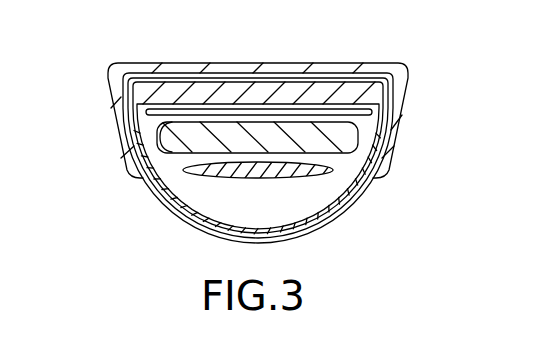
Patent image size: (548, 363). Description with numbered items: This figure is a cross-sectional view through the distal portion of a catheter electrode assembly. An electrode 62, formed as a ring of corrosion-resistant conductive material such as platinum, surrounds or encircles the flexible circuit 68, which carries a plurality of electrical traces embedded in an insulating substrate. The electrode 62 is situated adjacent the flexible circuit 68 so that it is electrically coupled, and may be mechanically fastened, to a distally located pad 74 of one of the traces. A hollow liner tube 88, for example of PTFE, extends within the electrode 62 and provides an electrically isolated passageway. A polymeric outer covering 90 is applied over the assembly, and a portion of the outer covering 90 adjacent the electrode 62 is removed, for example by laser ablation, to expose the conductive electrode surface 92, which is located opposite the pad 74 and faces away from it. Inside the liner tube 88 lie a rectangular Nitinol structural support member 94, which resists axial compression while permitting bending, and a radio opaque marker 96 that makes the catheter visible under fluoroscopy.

The electrode 62 is at (158, 77).
The flexible circuit 68 is at (133, 90).
The distally located pad 74 is at (273, 69).
The liner tube 88 is at (360, 145).
The outer covering 90 is at (328, 65).
The exposed conductive electrode surface 92 is at (153, 238).
The structural support member 94 is at (382, 156).
The radio opaque marker 96 is at (320, 170).